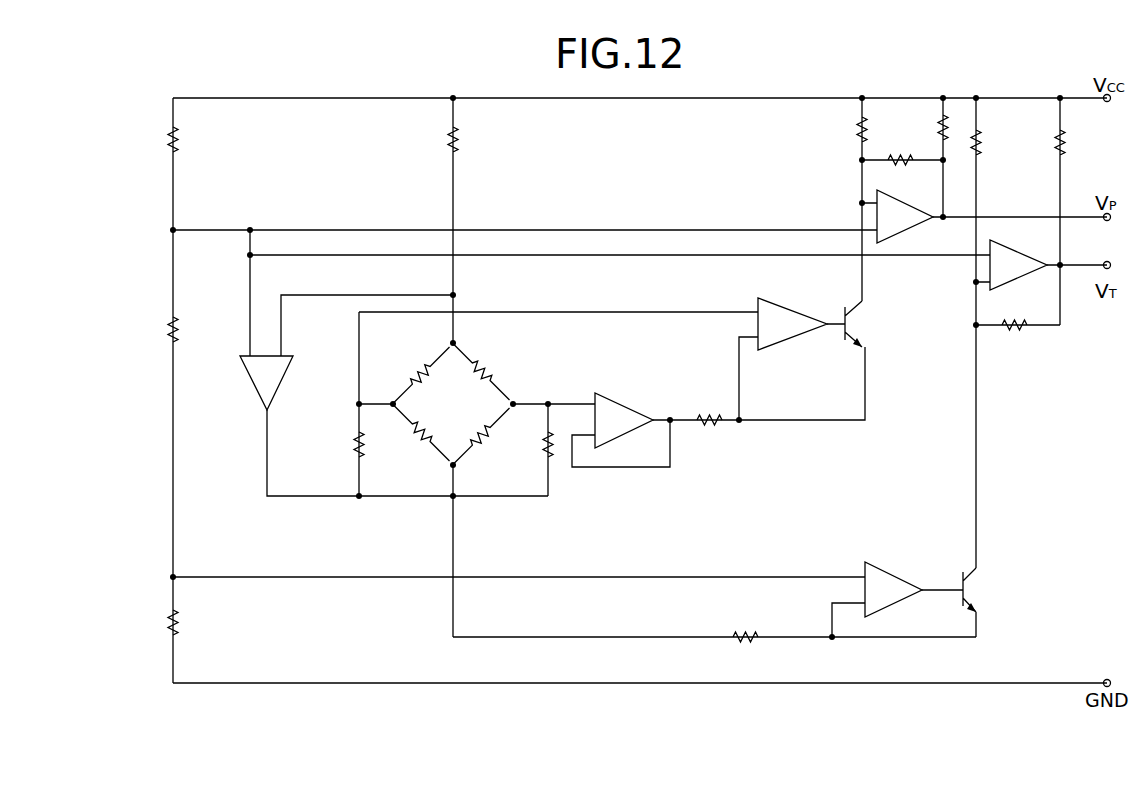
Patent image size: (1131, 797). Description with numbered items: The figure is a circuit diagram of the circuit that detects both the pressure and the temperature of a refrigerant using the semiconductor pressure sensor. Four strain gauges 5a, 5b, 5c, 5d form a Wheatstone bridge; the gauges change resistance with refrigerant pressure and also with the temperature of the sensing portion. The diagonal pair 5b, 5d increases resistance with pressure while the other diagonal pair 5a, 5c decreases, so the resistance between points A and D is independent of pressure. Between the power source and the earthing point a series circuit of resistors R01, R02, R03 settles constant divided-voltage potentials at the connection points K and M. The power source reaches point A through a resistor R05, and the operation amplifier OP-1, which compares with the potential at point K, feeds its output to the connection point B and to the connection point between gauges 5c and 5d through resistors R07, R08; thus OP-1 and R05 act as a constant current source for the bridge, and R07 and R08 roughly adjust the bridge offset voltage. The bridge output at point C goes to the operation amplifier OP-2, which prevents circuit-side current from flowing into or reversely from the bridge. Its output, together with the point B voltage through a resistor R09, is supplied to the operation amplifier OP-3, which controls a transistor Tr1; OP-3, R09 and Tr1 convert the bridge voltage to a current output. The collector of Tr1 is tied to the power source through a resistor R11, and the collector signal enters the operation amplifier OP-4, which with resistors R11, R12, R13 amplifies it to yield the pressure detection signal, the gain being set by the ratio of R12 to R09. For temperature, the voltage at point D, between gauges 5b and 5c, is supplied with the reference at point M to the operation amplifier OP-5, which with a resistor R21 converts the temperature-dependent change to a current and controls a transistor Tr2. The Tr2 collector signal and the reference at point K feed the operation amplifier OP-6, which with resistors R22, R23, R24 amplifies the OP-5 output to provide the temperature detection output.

The strain gauge 5a is at (410, 370).
The strain gauge 5b is at (413, 442).
The strain gauge 5c is at (489, 447).
The strain gauge 5d is at (493, 370).
The resistor R01 is at (190, 139).
The resistor R02 is at (190, 329).
The resistor R03 is at (192, 622).
The resistor R05 is at (470, 220).
The resistor R07 is at (338, 444).
The resistor R08 is at (528, 444).
The resistor R09 is at (711, 432).
The resistor R11 is at (843, 152).
The resistor R12 is at (902, 149).
The resistor R13 is at (924, 159).
The resistor R21 is at (714, 627).
The resistor R22 is at (993, 333).
The resistor R23 is at (1018, 336).
The resistor R24 is at (1078, 211).
The operation amplifier OP-1 is at (253, 388).
The operation amplifier OP-2 is at (632, 409).
The operation amplifier OP-3 is at (790, 309).
The operation amplifier OP-4 is at (915, 196).
The operation amplifier OP-5 is at (886, 566).
The operation amplifier OP-6 is at (1027, 254).
The transistor Tr1 is at (872, 275).
The transistor Tr2 is at (988, 602).
The connection point K is at (173, 230).
The connection point M is at (173, 577).
The point A is at (456, 295).
The connection point B is at (358, 404).
The output point C is at (548, 404).
The point D is at (456, 499).